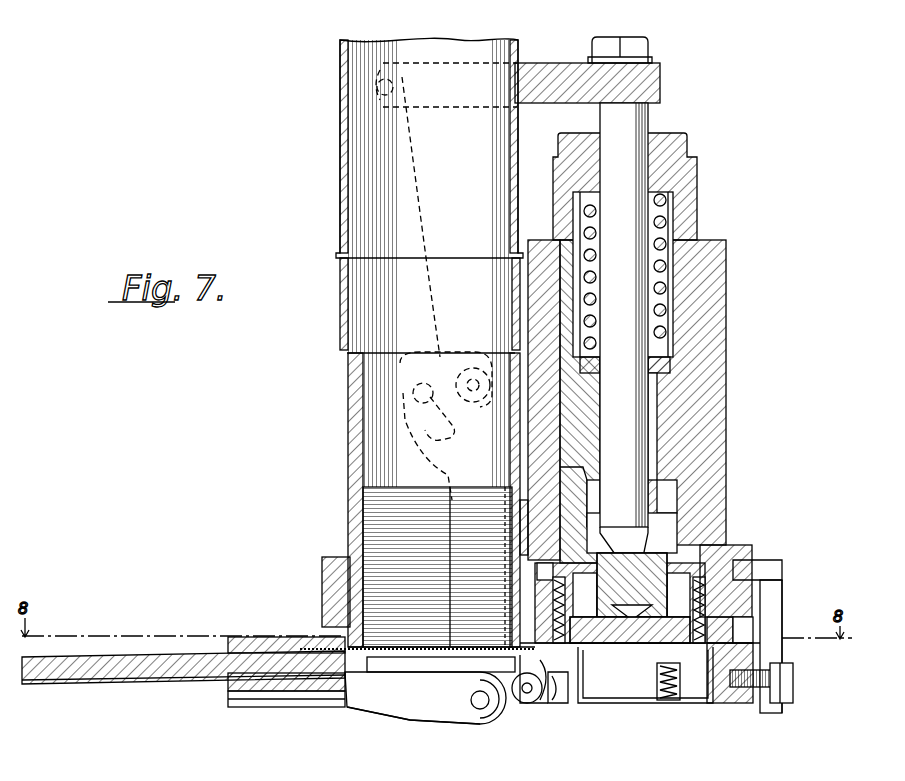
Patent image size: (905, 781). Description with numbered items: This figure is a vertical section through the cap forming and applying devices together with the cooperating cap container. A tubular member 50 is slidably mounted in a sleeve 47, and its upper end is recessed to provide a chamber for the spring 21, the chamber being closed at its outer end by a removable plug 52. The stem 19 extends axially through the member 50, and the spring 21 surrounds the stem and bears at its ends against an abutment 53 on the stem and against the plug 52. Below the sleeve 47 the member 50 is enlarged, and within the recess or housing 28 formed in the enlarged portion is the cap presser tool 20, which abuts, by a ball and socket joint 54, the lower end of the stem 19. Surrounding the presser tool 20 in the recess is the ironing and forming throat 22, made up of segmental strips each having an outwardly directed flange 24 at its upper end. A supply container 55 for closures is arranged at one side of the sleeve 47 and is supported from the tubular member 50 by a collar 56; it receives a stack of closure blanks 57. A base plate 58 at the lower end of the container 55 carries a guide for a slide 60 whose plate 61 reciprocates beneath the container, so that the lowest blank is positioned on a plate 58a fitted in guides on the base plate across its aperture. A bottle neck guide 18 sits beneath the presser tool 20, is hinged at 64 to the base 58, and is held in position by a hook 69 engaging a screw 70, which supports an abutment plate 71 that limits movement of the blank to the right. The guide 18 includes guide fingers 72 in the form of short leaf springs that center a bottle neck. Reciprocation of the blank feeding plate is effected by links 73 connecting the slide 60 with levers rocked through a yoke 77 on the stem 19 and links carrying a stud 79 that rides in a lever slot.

The yoke 77 is at (542, 77).
The plug 52 is at (670, 137).
The spring 21 is at (667, 220).
The stem 19 is at (630, 322).
The abutment 53 is at (670, 362).
The sleeve 47 is at (712, 387).
The tubular member 50 is at (676, 457).
The ball and socket joint 54 is at (712, 503).
The flange 24 is at (657, 545).
The collar 56 is at (733, 580).
The ironing and forming throat 22 is at (762, 563).
The hook 69 is at (780, 613).
The housing 28 is at (753, 633).
The screw 70 is at (792, 684).
The abutment plate 71 is at (723, 690).
The stud 79 is at (405, 394).
The container 55 is at (358, 498).
The closure blanks 57 is at (388, 520).
The slide 60 is at (257, 653).
The base plate 58 is at (320, 708).
The plate 58a is at (388, 655).
The plate 61 is at (453, 652).
The hinge 64 is at (530, 690).
The links 73 is at (413, 712).
The guide fingers 72 is at (567, 673).
The cap presser tool 20 is at (627, 640).
The bottle neck guide 18 is at (645, 690).